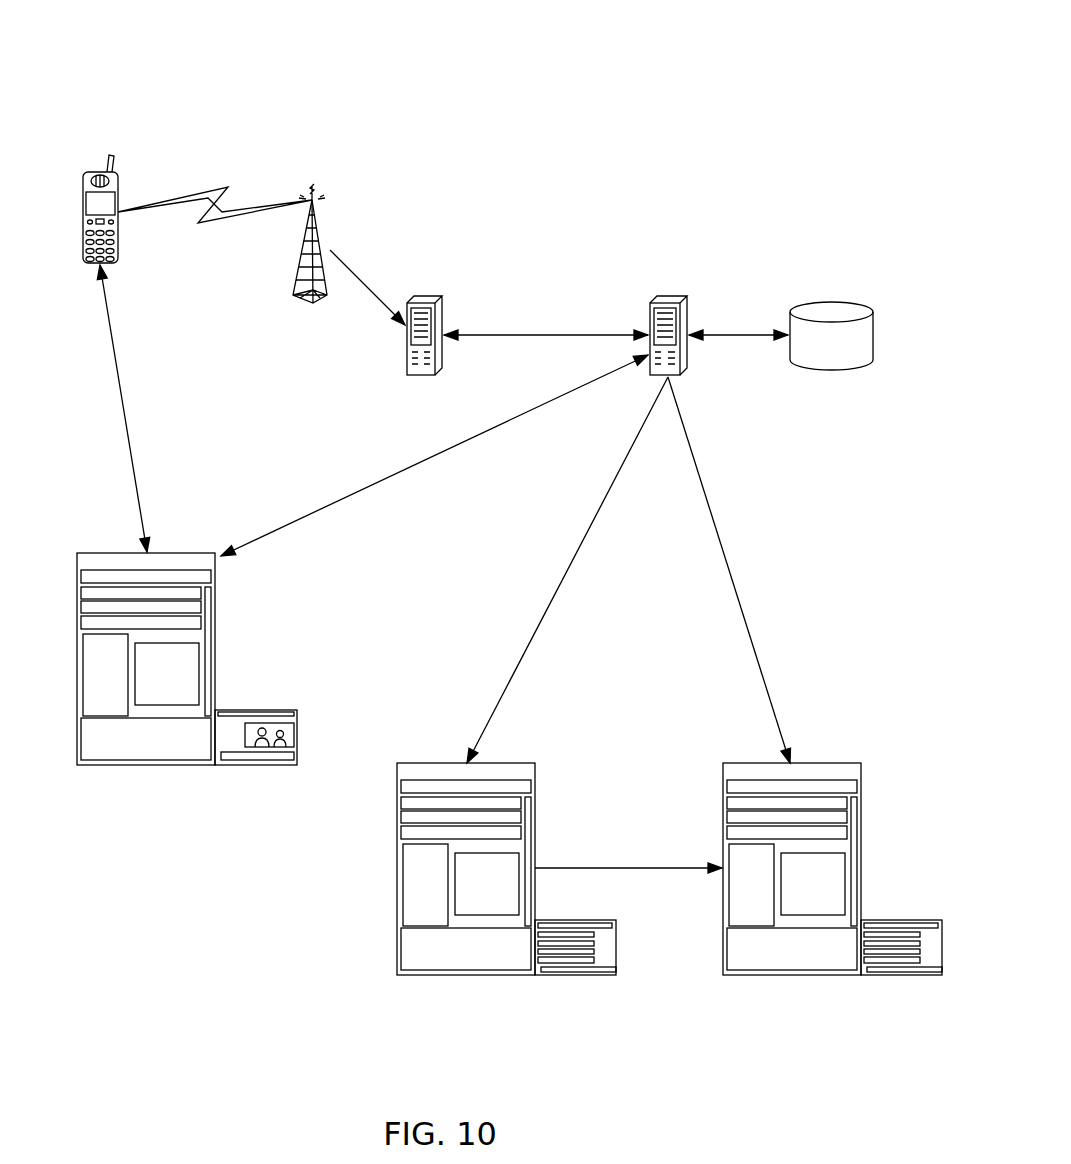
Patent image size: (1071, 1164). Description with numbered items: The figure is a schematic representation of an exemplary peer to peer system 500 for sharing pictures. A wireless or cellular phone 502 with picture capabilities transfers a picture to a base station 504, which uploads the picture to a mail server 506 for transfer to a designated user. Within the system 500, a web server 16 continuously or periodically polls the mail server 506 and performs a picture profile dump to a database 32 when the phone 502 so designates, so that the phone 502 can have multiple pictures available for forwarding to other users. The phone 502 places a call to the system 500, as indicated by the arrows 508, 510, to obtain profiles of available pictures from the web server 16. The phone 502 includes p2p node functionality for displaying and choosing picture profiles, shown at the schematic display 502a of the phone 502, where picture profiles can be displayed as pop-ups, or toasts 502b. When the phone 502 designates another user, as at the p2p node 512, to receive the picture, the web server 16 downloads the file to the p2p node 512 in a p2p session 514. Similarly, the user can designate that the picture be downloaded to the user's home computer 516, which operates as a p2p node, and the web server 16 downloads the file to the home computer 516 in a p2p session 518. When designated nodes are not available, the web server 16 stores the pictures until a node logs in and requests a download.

The peer to peer system 500 is at (840, 82).
The phone 502 is at (103, 172).
The base station 504 is at (322, 227).
The mail server 506 is at (418, 377).
The web server 16 is at (670, 298).
The database 32 is at (831, 336).
The arrow 508 is at (120, 385).
The arrow 510 is at (357, 495).
The schematic display 502a is at (217, 633).
The toasts 502b is at (248, 708).
The p2p node 512 is at (397, 818).
The p2p session 514 is at (553, 600).
The home computer 516 is at (722, 828).
The p2p session 518 is at (762, 660).